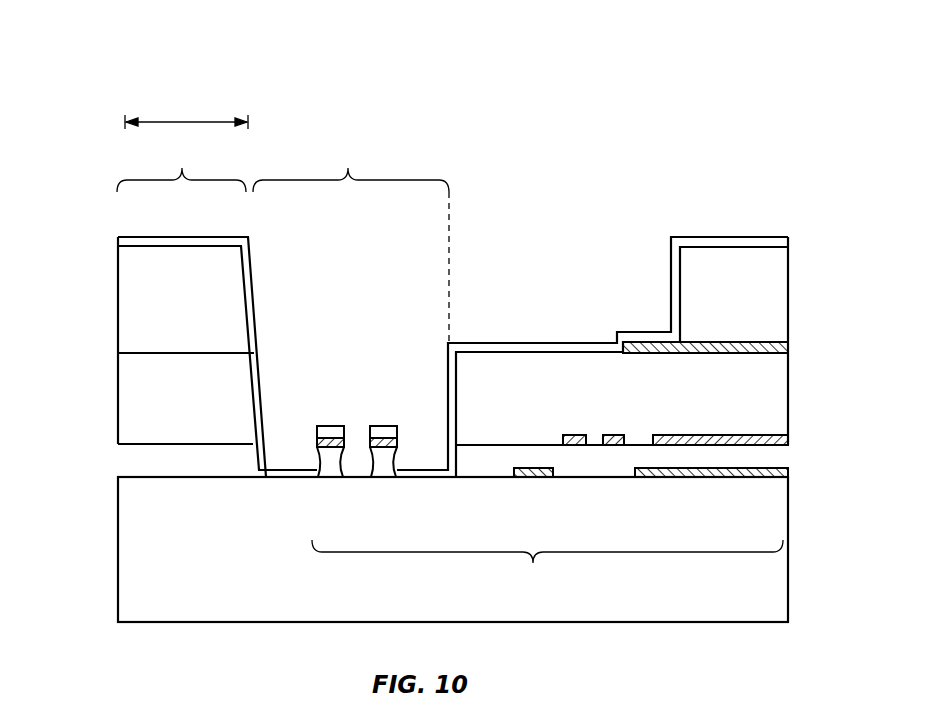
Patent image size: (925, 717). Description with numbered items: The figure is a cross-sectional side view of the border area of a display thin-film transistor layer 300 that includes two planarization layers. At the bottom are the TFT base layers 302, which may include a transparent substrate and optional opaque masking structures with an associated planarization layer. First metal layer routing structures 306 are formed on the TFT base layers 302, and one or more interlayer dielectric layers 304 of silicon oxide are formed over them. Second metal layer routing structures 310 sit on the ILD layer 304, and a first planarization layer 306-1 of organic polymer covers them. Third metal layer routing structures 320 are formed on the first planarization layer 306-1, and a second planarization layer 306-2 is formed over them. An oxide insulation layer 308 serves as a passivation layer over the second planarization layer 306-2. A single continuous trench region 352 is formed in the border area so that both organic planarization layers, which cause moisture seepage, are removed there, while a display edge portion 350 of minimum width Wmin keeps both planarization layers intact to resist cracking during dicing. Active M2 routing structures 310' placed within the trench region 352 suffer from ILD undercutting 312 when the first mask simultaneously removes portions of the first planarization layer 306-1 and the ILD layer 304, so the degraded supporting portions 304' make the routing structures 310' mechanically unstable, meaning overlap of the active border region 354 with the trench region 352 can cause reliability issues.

The display thin-film transistor layer 300 is at (82, 87).
The TFT base layers 302 is at (124, 545).
The interlayer dielectric layer 304 is at (451, 454).
The ILD layer portions 304' is at (357, 476).
The first metal layer routing structures 306 is at (640, 478).
The first planarization layer 306-1 is at (124, 398).
The second planarization layer 306-2 is at (124, 292).
The oxide insulation layer 308 is at (181, 242).
The second metal layer routing structures 310 is at (675, 414).
The M2 routing structures within trench region 310' is at (357, 430).
The ILD undercutting 312 is at (313, 461).
The third metal layer routing structures 320 is at (735, 344).
The display edge portion 350 is at (181, 170).
The trench region 352 is at (351, 245).
The active border region 354 is at (547, 562).